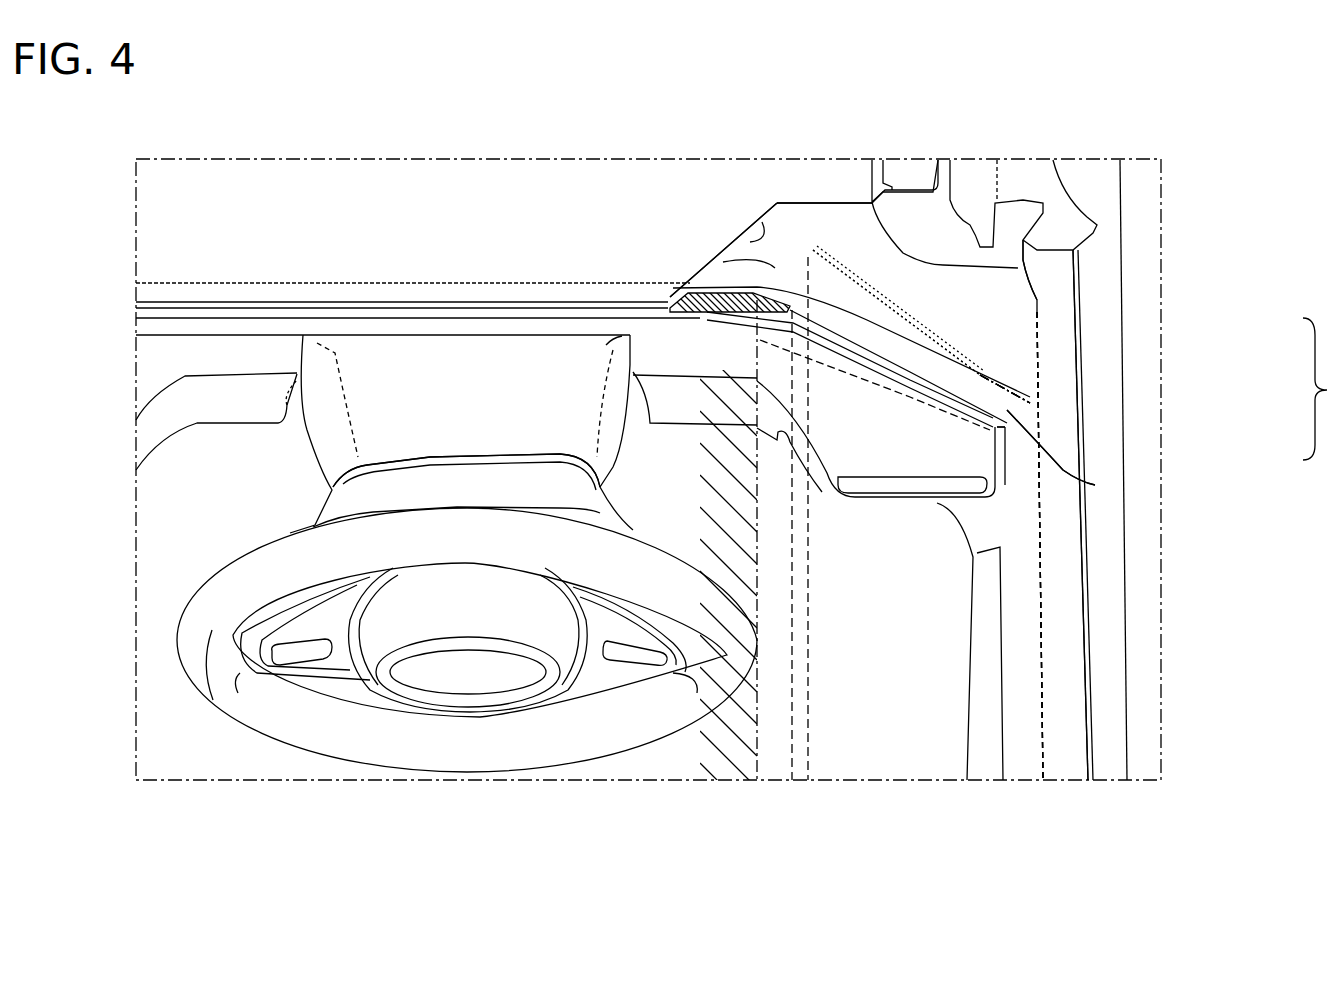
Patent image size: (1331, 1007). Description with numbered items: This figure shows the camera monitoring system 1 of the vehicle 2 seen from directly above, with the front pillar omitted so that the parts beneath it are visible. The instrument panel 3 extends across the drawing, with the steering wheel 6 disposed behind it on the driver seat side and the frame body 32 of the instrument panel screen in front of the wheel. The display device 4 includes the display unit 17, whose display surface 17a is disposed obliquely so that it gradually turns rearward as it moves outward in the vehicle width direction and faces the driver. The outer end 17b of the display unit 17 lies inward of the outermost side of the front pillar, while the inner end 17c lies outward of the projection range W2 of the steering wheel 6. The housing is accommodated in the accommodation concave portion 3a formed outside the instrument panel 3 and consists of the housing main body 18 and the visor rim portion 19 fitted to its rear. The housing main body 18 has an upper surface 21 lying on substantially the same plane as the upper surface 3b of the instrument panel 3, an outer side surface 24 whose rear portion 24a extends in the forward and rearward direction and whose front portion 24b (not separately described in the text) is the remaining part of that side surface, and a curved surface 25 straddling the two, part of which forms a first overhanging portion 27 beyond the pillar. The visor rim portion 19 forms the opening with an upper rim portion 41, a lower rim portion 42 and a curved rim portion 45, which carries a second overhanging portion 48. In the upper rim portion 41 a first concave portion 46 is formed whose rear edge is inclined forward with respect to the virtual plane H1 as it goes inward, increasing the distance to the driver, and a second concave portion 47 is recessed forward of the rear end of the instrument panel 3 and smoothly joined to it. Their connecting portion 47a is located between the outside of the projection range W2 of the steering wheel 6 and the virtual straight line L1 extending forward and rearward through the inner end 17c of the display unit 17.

The camera monitoring system 1 is at (776, 197).
The vehicle 2 is at (1165, 213).
The instrument panel 3 is at (235, 335).
The accommodation concave portion 3a is at (765, 245).
The upper surface of the instrument panel 3b is at (424, 237).
The display device 4 is at (896, 241).
The steering wheel 6 is at (457, 760).
The display unit 17 is at (830, 248).
The display surface 17a is at (866, 310).
The outer end of the display unit 17b is at (1040, 400).
The inner end of the display unit 17c is at (813, 250).
The housing main body 18 is at (1032, 340).
The visor rim portion 19 is at (1040, 433).
The upper surface 21 is at (775, 270).
The outer side surface 24 is at (1040, 318).
The rear portion of the outer side surface 24a is at (1040, 318).
The pillar inner flange 24b is at (1030, 283).
The curved surface 25 is at (1035, 367).
The first overhanging portion 27 is at (1035, 367).
The frame body 32 is at (470, 338).
The upper rim portion 41 is at (942, 377).
The lower rim portion 42 is at (832, 337).
The curved rim portion 45 is at (1014, 417).
The first concave portion 46 is at (910, 377).
The second concave portion 47 is at (700, 296).
The connecting portion 47a is at (790, 314).
The second overhanging portion 48 is at (1014, 417).
The virtual plane H1 is at (1100, 457).
The virtual straight line L1 is at (810, 692).
The projection range of the steering wheel W2 is at (730, 490).